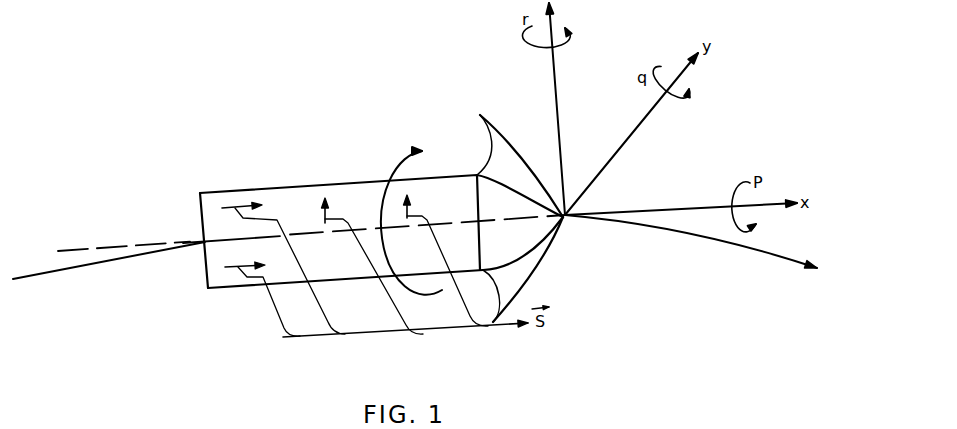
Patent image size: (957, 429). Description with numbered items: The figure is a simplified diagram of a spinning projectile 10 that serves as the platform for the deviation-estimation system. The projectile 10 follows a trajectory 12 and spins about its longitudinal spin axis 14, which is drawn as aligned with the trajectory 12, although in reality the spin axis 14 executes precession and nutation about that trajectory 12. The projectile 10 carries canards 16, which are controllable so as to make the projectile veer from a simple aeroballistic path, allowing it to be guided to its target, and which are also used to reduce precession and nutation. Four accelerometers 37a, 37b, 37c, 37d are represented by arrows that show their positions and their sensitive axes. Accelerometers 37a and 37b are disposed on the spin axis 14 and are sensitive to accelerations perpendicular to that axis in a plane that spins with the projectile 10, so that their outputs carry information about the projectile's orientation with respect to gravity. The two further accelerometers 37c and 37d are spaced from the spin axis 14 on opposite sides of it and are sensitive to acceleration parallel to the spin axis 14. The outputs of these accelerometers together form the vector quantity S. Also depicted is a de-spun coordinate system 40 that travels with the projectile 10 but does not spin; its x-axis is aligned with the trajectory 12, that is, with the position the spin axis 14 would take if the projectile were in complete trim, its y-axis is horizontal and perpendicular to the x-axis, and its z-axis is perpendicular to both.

The spinning projectile 10 is at (293, 127).
The trajectory 12 is at (760, 248).
The longitudinal spin axis 14 is at (102, 243).
The canards 16 is at (510, 150).
The accelerometer 37a is at (412, 190).
The accelerometer 37b is at (330, 192).
The accelerometer 37c is at (228, 207).
The accelerometer 37d is at (234, 270).
The de-spun coordinate system 40 is at (634, 236).